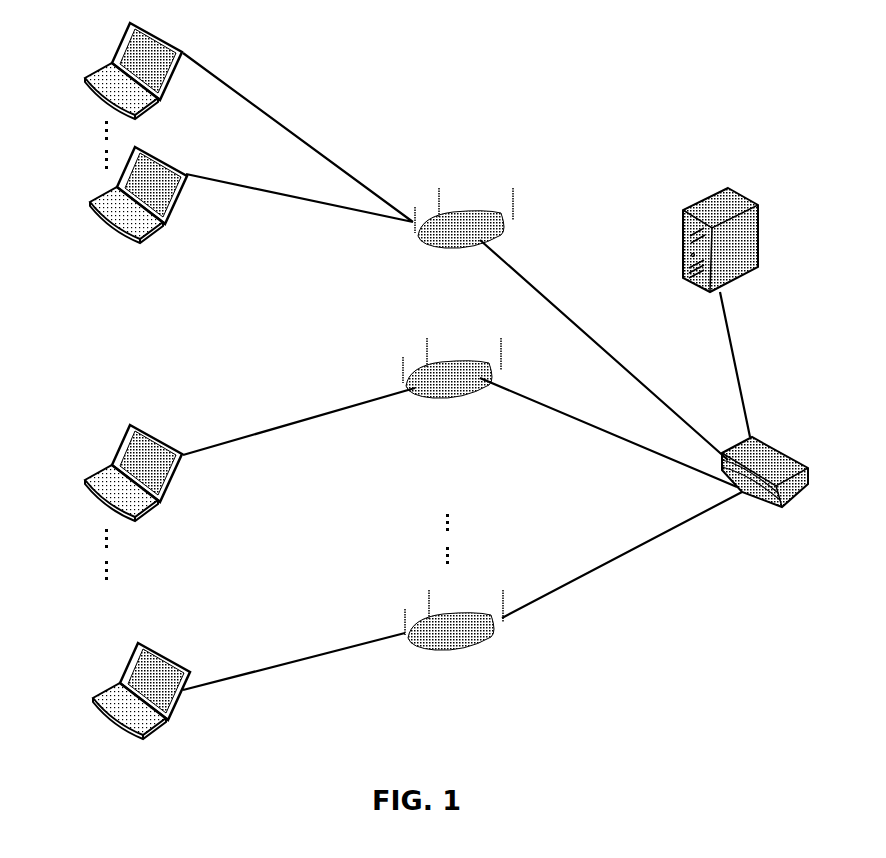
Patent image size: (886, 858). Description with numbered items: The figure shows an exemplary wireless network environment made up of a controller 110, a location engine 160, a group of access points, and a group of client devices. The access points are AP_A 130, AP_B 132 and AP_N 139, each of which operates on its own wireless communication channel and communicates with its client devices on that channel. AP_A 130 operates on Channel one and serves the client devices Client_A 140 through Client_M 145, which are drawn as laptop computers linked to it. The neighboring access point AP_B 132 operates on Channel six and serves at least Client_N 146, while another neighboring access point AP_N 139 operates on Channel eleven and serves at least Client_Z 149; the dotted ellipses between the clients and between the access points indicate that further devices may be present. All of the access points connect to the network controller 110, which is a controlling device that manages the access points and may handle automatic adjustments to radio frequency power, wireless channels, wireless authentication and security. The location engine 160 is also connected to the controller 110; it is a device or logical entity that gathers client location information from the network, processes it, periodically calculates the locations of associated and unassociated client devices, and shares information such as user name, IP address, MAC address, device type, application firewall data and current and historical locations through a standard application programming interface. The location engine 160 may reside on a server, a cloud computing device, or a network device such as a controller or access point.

The controller 110 is at (747, 561).
The AP_A 130 is at (466, 316).
The AP_B 132 is at (461, 465).
The AP_N 139 is at (461, 715).
The Client_A 140 is at (87, 53).
The Client_M 145 is at (78, 268).
The Client_N 146 is at (84, 460).
The Client_Z 149 is at (81, 761).
The location engine 160 is at (675, 183).